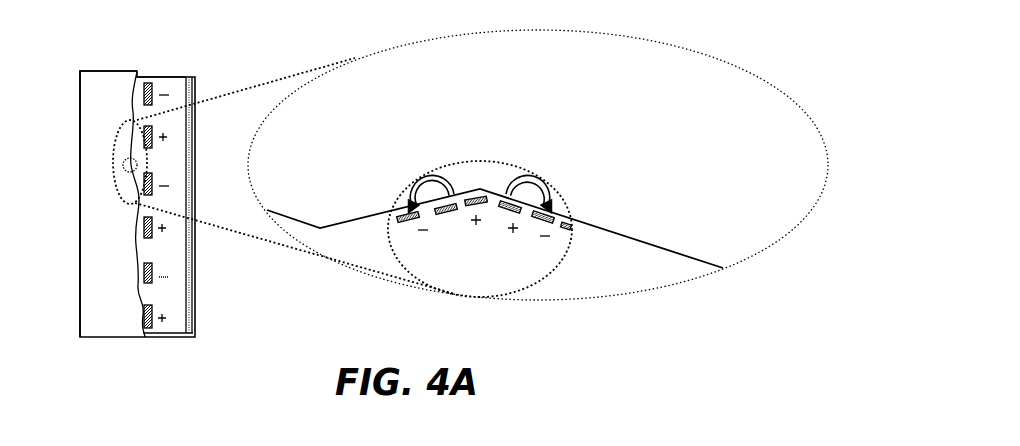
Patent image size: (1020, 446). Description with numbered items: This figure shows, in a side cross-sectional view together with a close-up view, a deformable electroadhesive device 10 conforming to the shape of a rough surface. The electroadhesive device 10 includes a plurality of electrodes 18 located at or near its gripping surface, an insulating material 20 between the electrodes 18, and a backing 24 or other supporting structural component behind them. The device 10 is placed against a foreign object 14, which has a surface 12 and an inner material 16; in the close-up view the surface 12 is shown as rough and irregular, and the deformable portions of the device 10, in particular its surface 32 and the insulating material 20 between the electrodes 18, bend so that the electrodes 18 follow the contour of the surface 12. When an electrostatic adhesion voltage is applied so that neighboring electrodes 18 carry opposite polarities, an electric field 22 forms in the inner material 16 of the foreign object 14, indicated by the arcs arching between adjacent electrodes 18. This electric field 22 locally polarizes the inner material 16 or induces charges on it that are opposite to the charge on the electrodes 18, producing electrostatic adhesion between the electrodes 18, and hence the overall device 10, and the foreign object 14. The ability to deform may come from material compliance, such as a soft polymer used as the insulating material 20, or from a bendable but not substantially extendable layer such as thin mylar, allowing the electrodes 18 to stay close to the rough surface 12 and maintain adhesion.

The electroadhesive device 10 is at (214, 66).
The surface 12 is at (133, 110).
The foreign object 14 is at (101, 71).
The inner material 16 is at (115, 250).
The electrodes 18 is at (153, 278).
The insulating material 20 is at (178, 256).
The electric field 22 is at (432, 178).
The backing 24 is at (193, 258).
The surface 32 is at (133, 113).